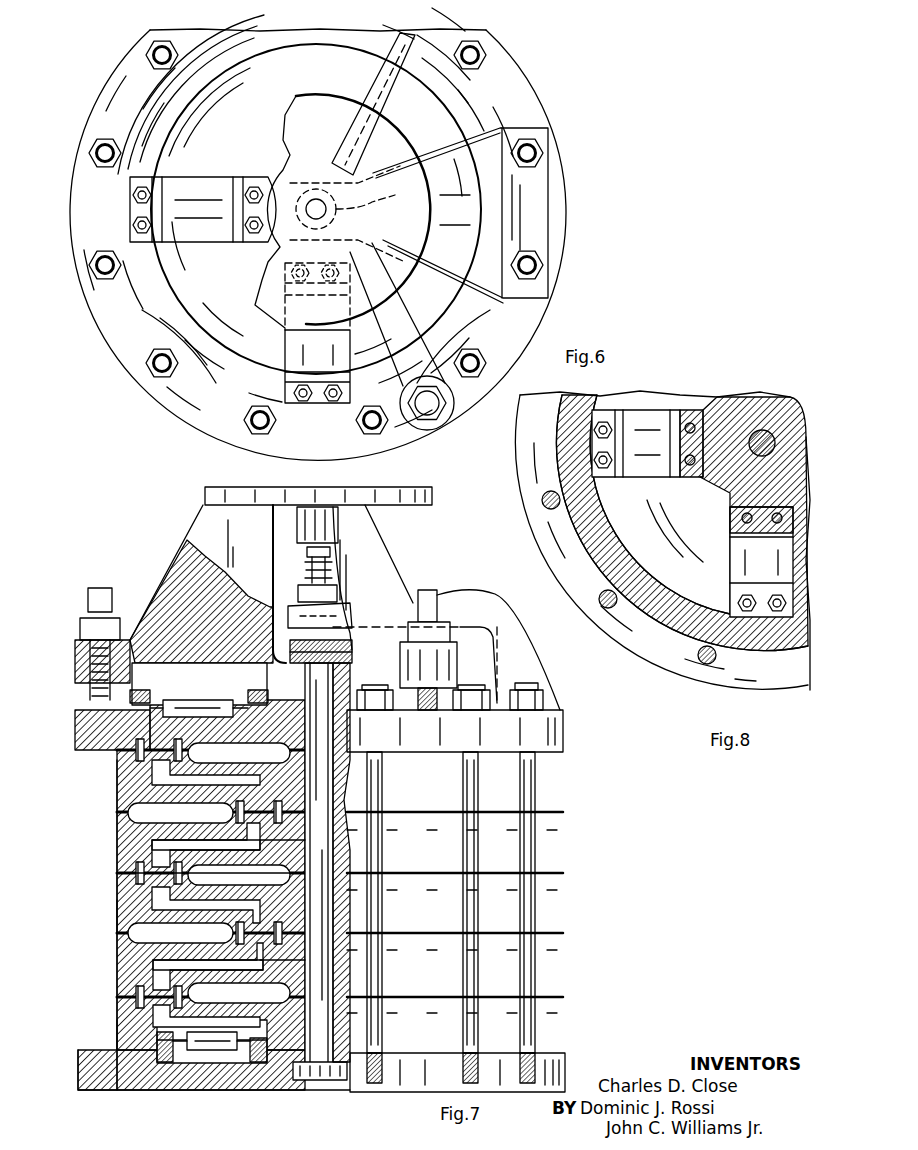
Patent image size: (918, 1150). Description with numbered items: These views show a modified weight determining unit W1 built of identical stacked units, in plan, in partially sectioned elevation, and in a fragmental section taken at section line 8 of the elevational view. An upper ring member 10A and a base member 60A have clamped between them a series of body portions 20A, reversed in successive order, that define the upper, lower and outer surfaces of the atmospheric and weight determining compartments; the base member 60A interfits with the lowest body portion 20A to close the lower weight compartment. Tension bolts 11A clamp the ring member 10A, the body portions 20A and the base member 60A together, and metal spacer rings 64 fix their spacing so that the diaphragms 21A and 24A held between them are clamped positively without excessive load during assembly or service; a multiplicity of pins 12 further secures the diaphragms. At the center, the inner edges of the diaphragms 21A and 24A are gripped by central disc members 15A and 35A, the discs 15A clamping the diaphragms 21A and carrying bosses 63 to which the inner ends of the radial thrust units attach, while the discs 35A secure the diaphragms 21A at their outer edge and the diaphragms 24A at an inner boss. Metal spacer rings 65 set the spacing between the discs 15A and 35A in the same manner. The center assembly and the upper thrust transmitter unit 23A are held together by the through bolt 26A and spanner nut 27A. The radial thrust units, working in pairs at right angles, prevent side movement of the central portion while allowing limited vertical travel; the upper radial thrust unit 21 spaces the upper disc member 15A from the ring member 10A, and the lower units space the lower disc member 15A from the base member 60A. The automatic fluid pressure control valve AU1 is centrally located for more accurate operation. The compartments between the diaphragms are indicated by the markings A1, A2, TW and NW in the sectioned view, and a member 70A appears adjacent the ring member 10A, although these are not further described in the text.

In FIG. 6, the weight determining unit W1 is at (545, 106).
In FIG. 8, the weight determining unit W1 is at (548, 502).
In FIG. 7, the weight determining unit W1 is at (505, 840).
In FIG. 6, the upper ring member 10A is at (562, 190).
In FIG. 7, the upper ring member 10A is at (565, 742).
In FIG. 6, the bracket arm 70A is at (540, 217).
In FIG. 7, the bracket arm 70A is at (527, 608).
In FIG. 6, the tension bolts 11A is at (536, 264).
In FIG. 8, the tension bolts 11A is at (548, 509).
In FIG. 7, the tension bolts 11A is at (545, 690).
In FIG. 6, the upper radial thrust unit 21 is at (230, 242).
In FIG. 8, the upper radial thrust unit 21 is at (653, 478).
In FIG. 7, the upper radial thrust unit 21 is at (187, 703).
In FIG. 6, the upper thrust transmitter unit 23A is at (455, 397).
In FIG. 7, the upper thrust transmitter unit 23A is at (400, 547).
In FIG. 8, the base member 60A is at (523, 465).
In FIG. 7, the base member 60A is at (117, 1032).
In FIG. 8, the central disc members 15A is at (682, 504).
In FIG. 7, the central disc members 15A is at (120, 737).
In FIG. 7, the adjusting unit AU1 is at (337, 527).
In FIG. 7, the spanner nut 27A is at (352, 655).
In FIG. 7, the bosses 63 is at (245, 715).
In FIG. 7, the metal spacer rings 64 is at (136, 753).
In FIG. 7, the diaphragms 21A is at (152, 773).
In FIG. 7, the central disc members 35A is at (165, 797).
In FIG. 7, the wall TW is at (117, 806).
In FIG. 7, the passage A1 is at (160, 846).
In FIG. 7, the pins 12 is at (150, 884).
In FIG. 7, the wall NW is at (128, 911).
In FIG. 7, the passage A2 is at (160, 974).
In FIG. 7, the body portions 20A is at (505, 797).
In FIG. 7, the diaphragms 24A is at (310, 841).
In FIG. 7, the through bolt 26A is at (320, 911).
In FIG. 7, the metal spacer rings 65 is at (351, 862).
In FIG. 7, the section line 8— 8 is at (358, 1024).